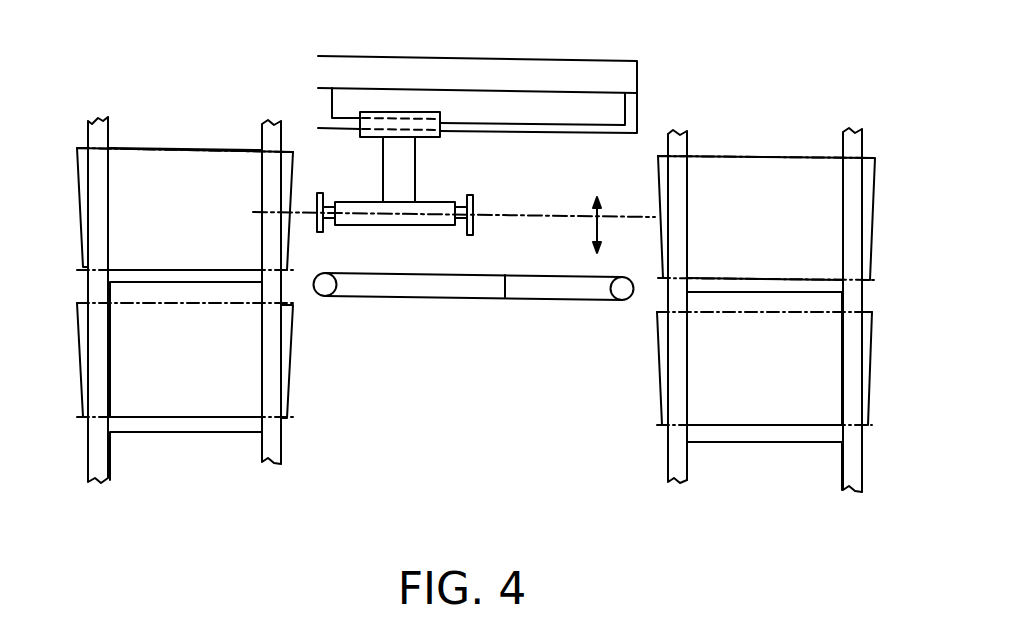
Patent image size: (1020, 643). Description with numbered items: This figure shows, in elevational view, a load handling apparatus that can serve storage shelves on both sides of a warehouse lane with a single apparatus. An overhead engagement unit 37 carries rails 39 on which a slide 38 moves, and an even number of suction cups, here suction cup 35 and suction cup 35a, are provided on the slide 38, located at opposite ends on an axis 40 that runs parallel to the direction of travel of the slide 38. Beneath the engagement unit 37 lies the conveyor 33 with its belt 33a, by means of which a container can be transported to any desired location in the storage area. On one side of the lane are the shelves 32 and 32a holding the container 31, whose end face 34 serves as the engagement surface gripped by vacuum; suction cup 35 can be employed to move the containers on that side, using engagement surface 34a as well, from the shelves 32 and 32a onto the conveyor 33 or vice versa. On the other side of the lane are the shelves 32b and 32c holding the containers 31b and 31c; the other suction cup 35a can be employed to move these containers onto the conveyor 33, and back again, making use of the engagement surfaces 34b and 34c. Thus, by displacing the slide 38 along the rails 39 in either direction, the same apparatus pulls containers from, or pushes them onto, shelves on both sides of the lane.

The container 31 is at (200, 159).
The shelf 32 is at (193, 269).
The shelf 32a is at (201, 421).
The end face 34 is at (290, 180).
The engagement surface 34a is at (290, 338).
The engagement surface 34b is at (658, 175).
The engagement surface 34c is at (658, 365).
The container 31b is at (765, 173).
The container 31c is at (764, 373).
The shelf 32b is at (795, 283).
The shelf 32c is at (812, 432).
The conveyor 33 is at (550, 287).
The belt 33a is at (505, 273).
The suction cup 35 is at (320, 232).
The suction cup 35a is at (477, 203).
The engagement unit 37 is at (596, 68).
The slide 38 is at (418, 125).
The rails 39 is at (538, 127).
The axis 40 is at (545, 212).